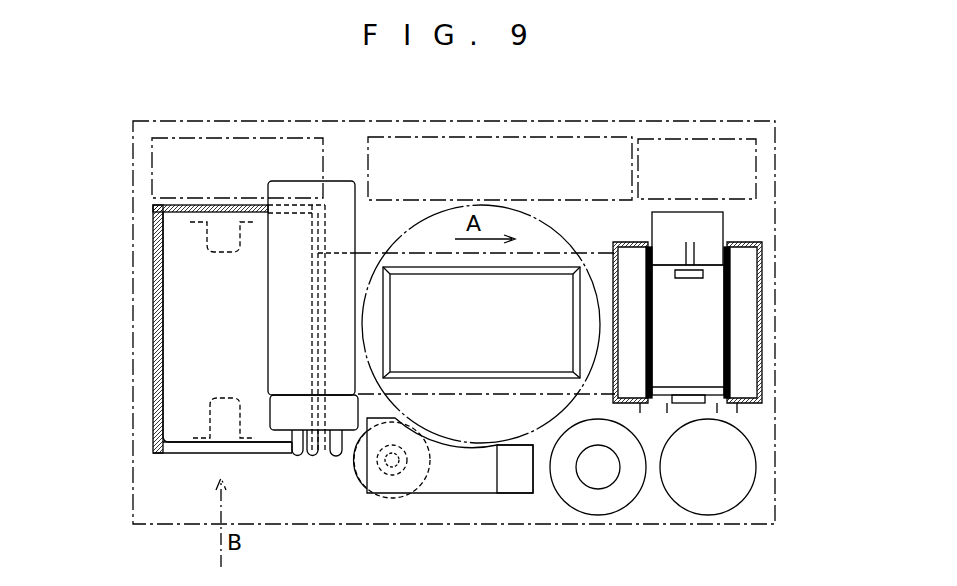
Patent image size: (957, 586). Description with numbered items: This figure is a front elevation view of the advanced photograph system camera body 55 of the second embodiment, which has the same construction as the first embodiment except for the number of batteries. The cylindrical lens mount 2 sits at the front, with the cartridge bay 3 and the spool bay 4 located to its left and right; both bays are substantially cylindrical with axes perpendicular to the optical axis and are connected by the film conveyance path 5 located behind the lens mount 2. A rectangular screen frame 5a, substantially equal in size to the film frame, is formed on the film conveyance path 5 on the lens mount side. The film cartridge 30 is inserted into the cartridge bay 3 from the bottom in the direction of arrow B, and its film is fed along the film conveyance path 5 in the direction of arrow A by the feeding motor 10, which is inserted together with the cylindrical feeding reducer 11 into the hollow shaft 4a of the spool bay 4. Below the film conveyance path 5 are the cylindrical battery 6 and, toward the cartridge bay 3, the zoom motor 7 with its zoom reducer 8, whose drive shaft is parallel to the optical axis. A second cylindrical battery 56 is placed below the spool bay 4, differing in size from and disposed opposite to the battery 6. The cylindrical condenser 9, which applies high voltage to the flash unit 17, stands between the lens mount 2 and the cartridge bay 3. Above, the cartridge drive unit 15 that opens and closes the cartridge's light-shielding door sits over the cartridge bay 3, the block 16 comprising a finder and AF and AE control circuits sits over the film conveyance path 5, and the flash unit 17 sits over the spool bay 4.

The advanced photograph system camera body 55 is at (80, 191).
The cartridge drive unit 15 is at (222, 138).
The block comprising a finder 16 is at (465, 136).
The flash unit 17 is at (710, 138).
The condenser 9 is at (340, 182).
The cartridge bay 3 is at (150, 280).
The film cartridge 30 is at (185, 367).
The film conveyance path 5 is at (535, 267).
The screen frame 5a is at (556, 273).
The spool bay 4 is at (761, 290).
The hollow shaft 4a is at (731, 343).
The feeding motor 10 is at (703, 373).
The feeding reducer 11 is at (724, 218).
The battery 6 is at (628, 495).
The battery 56 is at (704, 485).
The zoom motor 7 is at (352, 478).
The zoom reducer 8 is at (450, 494).
The lens mount 2 is at (500, 494).